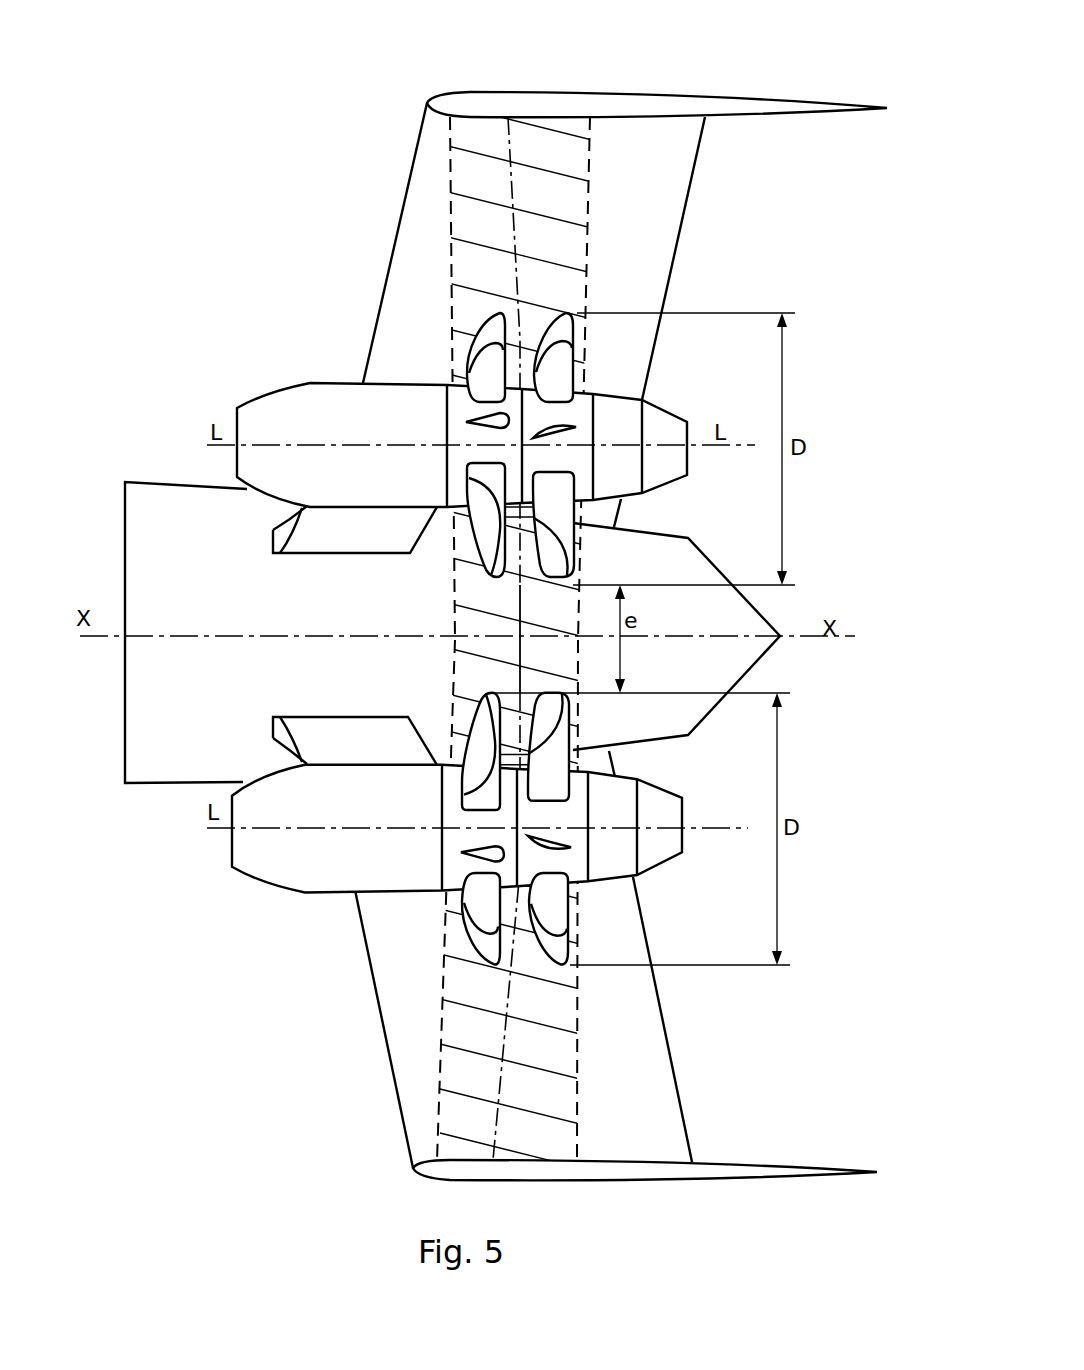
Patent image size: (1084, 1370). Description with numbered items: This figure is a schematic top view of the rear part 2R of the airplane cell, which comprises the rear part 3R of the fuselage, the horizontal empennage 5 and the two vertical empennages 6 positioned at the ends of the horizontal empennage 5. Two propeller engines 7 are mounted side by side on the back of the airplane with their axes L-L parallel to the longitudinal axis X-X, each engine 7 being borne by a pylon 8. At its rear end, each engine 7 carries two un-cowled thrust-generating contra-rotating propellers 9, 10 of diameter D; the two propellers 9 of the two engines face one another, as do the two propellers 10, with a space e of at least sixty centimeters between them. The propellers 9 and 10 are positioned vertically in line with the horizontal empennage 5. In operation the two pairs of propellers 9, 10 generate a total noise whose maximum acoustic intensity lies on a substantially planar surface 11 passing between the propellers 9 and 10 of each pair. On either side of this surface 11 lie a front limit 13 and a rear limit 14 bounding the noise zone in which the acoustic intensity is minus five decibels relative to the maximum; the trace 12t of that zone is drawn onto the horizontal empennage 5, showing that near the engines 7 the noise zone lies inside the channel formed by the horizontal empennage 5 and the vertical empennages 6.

The rear part of the cell 2R is at (812, 493).
The rear part of the fuselage 3R is at (158, 765).
The horizontal empennage 5 is at (652, 262).
The vertical empennage 6 is at (650, 106).
The propeller engine 7 is at (328, 415).
The pylon 8 is at (346, 530).
The propeller 9 is at (487, 373).
The propeller 10 is at (575, 367).
The surface of maximum acoustic intensity 11 is at (520, 268).
The trace of the noise zone 12t is at (493, 203).
The front limit 13 is at (457, 1073).
The rear limit 14 is at (589, 182).